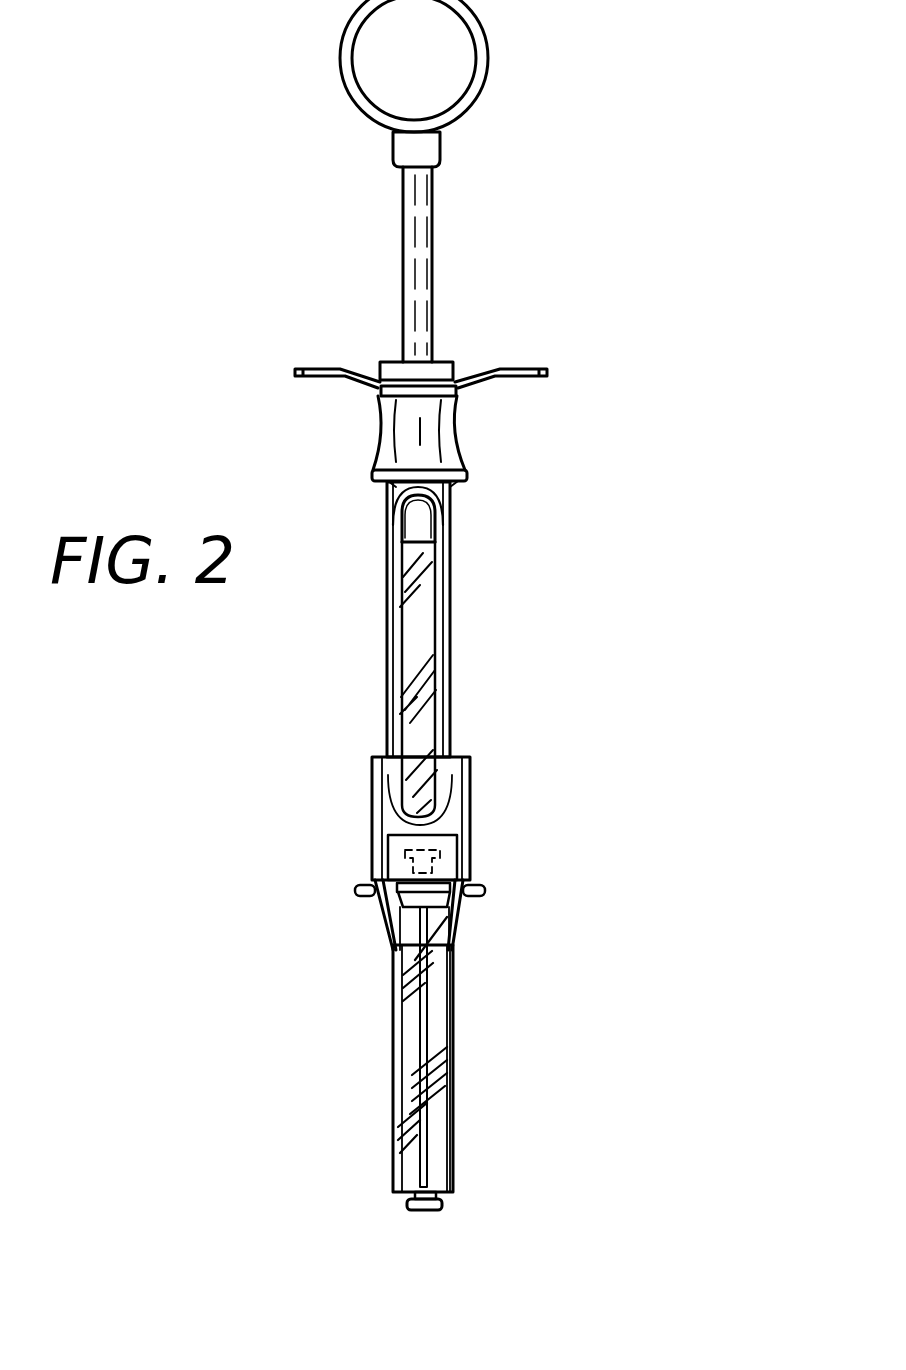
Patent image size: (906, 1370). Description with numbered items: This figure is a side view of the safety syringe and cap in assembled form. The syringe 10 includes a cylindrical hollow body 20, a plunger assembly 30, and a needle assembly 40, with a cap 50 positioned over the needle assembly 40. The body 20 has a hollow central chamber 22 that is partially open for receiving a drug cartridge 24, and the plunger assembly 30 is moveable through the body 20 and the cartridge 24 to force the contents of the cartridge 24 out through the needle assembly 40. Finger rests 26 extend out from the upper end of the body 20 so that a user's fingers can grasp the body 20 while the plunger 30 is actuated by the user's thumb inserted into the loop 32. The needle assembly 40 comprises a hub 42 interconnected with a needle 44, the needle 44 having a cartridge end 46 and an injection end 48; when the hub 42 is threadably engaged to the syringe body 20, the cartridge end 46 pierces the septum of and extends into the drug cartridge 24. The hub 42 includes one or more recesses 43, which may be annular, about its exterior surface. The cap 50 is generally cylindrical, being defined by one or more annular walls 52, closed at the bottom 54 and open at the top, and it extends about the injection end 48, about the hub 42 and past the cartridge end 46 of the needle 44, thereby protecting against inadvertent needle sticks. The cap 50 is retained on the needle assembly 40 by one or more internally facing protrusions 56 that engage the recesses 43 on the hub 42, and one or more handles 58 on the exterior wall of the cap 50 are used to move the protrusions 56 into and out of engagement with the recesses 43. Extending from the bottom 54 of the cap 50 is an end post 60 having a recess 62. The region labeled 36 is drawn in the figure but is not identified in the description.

The syringe 10 is at (583, 451).
The cylindrical hollow body 20 is at (483, 649).
The hollow central chamber 22 is at (447, 618).
The drug cartridge 24 is at (420, 722).
The finger rests 26 is at (305, 368).
The plunger assembly 30 is at (434, 277).
The loop 32 is at (489, 49).
The tapered body 36 is at (395, 917).
The needle assembly 40 is at (360, 851).
The hub 42 is at (465, 840).
The recesses 43 is at (372, 875).
The needle 44 is at (430, 1010).
The cartridge end 46 is at (425, 790).
The injection end 48 is at (430, 1165).
The cap 50 is at (442, 1011).
The annular walls 52 is at (470, 790).
The bottom 54 is at (445, 1196).
The protrusions 56 is at (450, 907).
The handles 58 is at (357, 892).
The end post 60 is at (420, 1210).
The recess 62 is at (405, 1196).